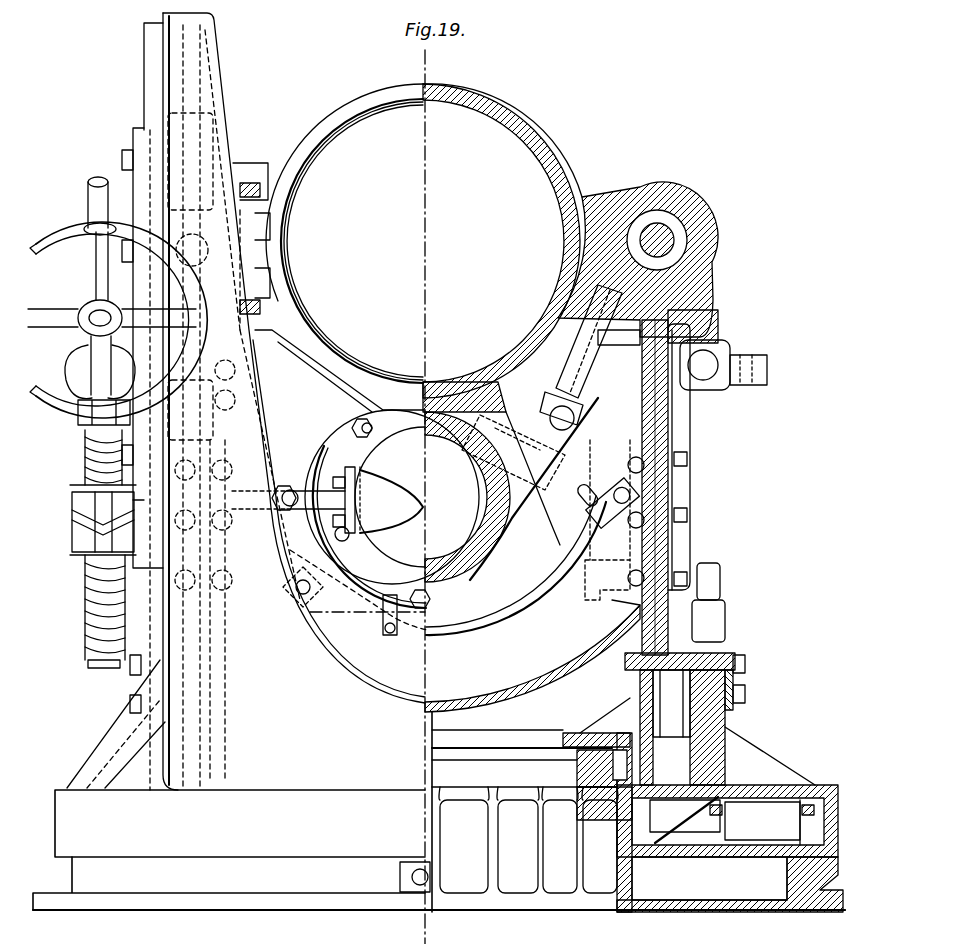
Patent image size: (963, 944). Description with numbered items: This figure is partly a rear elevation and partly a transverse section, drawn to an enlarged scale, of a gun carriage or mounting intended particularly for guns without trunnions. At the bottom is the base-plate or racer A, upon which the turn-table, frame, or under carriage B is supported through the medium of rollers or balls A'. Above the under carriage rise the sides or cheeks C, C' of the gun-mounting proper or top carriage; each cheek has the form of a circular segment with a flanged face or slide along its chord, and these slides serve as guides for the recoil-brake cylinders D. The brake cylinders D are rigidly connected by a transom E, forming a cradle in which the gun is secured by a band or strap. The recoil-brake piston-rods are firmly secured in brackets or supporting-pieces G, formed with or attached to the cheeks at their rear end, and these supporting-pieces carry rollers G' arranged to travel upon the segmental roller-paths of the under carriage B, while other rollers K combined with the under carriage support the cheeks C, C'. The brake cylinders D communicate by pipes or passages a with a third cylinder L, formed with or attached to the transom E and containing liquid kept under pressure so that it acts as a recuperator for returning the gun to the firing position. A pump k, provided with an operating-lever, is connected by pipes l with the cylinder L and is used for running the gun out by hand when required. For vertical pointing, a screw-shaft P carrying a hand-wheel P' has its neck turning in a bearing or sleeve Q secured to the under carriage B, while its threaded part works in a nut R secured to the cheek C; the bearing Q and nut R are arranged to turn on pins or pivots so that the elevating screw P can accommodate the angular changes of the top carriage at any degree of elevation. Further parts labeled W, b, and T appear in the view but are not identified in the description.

The base-plate or racer A is at (439, 822).
The rollers or balls A' is at (727, 821).
The turn-table, frame, or under carriage B is at (435, 462).
The side or cheek of top carriage C is at (206, 610).
The side or cheek of top carriage C' is at (653, 487).
The recoil-brake cylinder D is at (643, 259).
The shaft W is at (657, 240).
The transom E is at (417, 314).
The ring flange b is at (502, 140).
The brackets or supporting-pieces G is at (234, 266).
The rollers G' is at (251, 235).
The pipes or passages a is at (542, 387).
The pump k is at (606, 520).
The third cylinder L is at (451, 503).
The pipes l is at (419, 551).
The rollers K is at (685, 719).
The bracket T is at (610, 785).
The screw-shaft P is at (93, 549).
The hand-wheel P' is at (117, 297).
The bearing or sleeve Q is at (92, 385).
The nut R is at (94, 520).